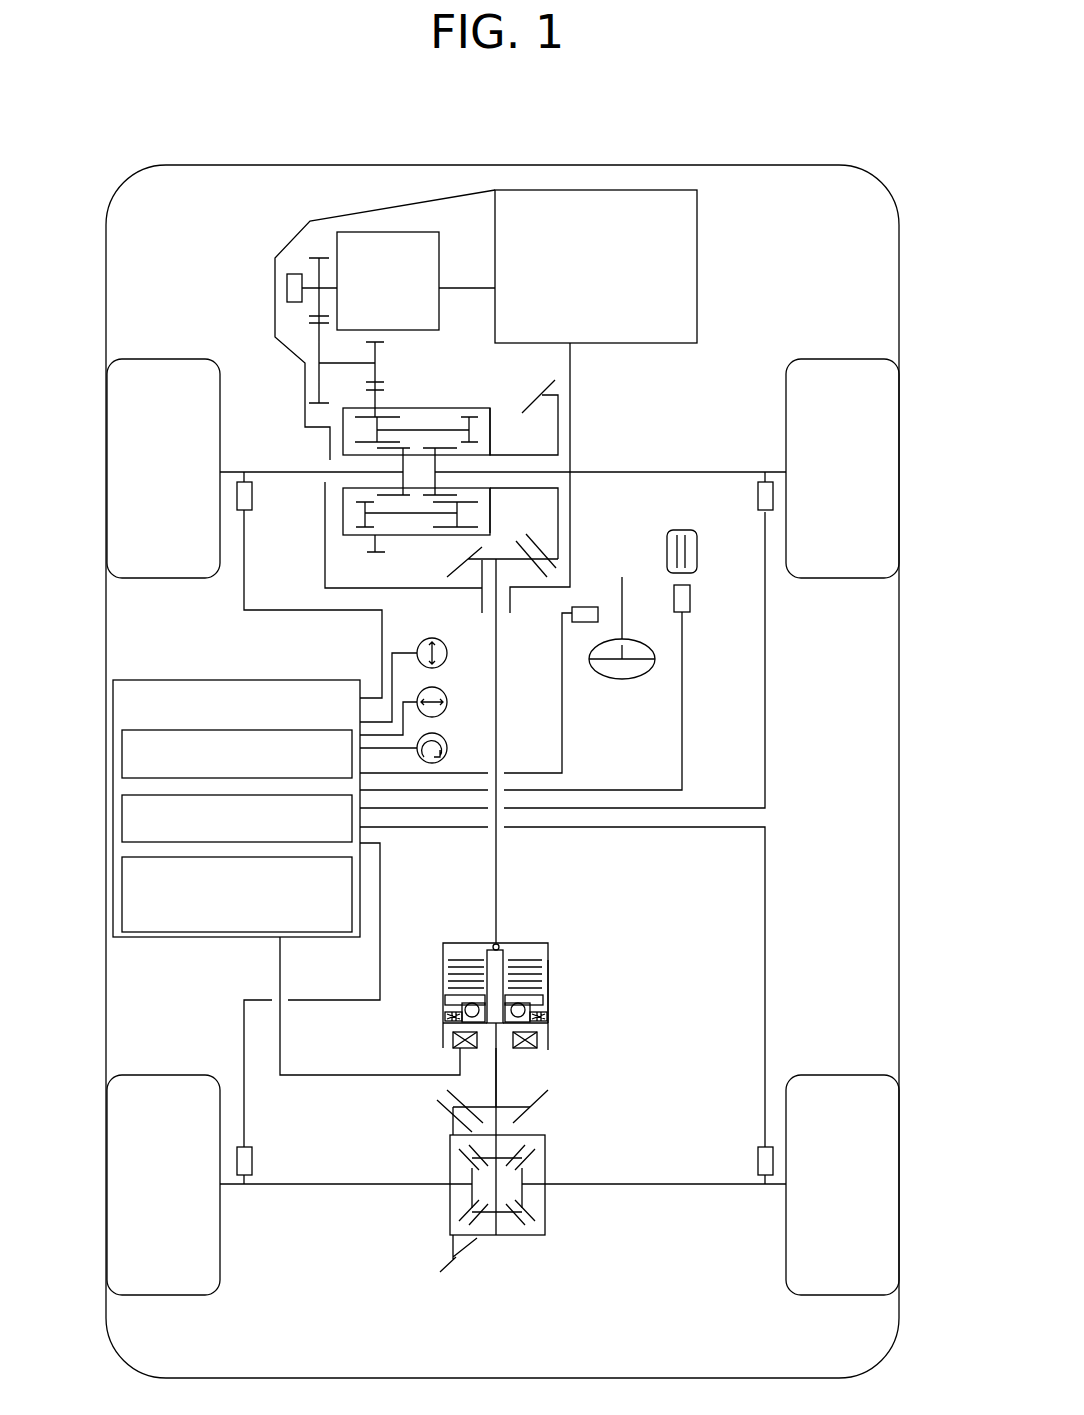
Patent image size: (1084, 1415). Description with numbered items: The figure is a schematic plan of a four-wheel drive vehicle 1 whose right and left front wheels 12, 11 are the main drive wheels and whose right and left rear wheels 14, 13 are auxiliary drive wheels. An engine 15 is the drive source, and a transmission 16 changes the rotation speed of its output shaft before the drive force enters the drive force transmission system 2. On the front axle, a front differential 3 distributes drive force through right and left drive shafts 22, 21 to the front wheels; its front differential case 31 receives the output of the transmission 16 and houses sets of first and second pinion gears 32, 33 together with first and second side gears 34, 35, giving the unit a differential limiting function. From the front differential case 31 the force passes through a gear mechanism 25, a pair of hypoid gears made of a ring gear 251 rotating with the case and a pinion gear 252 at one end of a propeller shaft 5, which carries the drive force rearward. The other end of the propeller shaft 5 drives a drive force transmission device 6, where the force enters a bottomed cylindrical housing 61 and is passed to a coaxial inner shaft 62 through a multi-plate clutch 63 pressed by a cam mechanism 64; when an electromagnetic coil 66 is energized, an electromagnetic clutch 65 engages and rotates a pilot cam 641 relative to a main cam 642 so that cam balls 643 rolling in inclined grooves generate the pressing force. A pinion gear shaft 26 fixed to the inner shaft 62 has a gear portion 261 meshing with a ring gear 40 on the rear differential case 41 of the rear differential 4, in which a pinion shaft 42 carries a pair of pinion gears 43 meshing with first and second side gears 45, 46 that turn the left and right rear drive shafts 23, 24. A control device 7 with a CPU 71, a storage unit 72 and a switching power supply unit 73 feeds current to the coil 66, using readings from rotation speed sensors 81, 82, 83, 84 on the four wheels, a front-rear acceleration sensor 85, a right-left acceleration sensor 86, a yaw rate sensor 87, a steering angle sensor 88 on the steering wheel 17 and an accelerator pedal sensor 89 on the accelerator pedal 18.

The four-wheel drive vehicle 1 is at (830, 113).
The drive force transmission system 2 is at (728, 379).
The front differential 3 is at (351, 553).
The rear differential 4 is at (504, 1202).
The propeller shaft 5 is at (498, 700).
The drive force transmission device 6 is at (553, 915).
The control device 7 is at (204, 780).
The left front wheel 11 is at (122, 440).
The right front wheel 12 is at (882, 440).
The left rear wheel 13 is at (122, 1210).
The right rear wheel 14 is at (882, 1210).
The engine 15 is at (633, 205).
The transmission 16 is at (383, 231).
The steering wheel 17 is at (613, 681).
The accelerator pedal 18 is at (698, 553).
The left drive shaft on the front wheel side 21 is at (293, 467).
The right drive shaft on the front wheel side 22 is at (615, 470).
The left drive shaft on the rear wheel side 23 is at (357, 1186).
The right drive shaft on the rear wheel side 24 is at (718, 1186).
The gear mechanism 25 is at (595, 534).
The ring gear 251 is at (530, 543).
The pinion gear 252 is at (548, 566).
The pinion gear shaft 26 is at (493, 1089).
The gear portion 261 is at (447, 1097).
The front differential case 31 is at (397, 410).
The first pinion gear 32 is at (441, 430).
The second pinion gear 33 is at (415, 515).
The first side gear 34 is at (400, 482).
The second side gear 35 is at (437, 461).
The ring gear 40 is at (450, 1266).
The rear differential case 41 is at (517, 1240).
The pinion shaft 42 is at (493, 1180).
The pinion gears 43 is at (510, 1157).
The first side gear 45 is at (468, 1195).
The second side gear 46 is at (525, 1172).
The housing 61 is at (470, 943).
The inner shaft 62 is at (500, 945).
The multi-plate clutch 63 is at (545, 962).
The cam mechanism 64 is at (565, 1000).
The electromagnetic clutch 65 is at (547, 1015).
The electromagnetic coil 66 is at (547, 1042).
The pilot cam 641 is at (470, 1019).
The main cam 642 is at (447, 998).
The cam balls 643 is at (447, 1013).
The CPU 71 is at (120, 756).
The storage unit 72 is at (120, 824).
The switching power supply unit 73 is at (120, 894).
The rotation speed sensor 81 is at (245, 469).
The rotation speed sensor 82 is at (766, 470).
The rotation speed sensor 83 is at (253, 1160).
The rotation speed sensor 84 is at (755, 1160).
The front-rear acceleration sensor 85 is at (447, 650).
The right-left acceleration sensor 86 is at (447, 699).
The yaw rate sensor 87 is at (447, 742).
The steering angle sensor 88 is at (583, 606).
The accelerator pedal sensor 89 is at (673, 605).